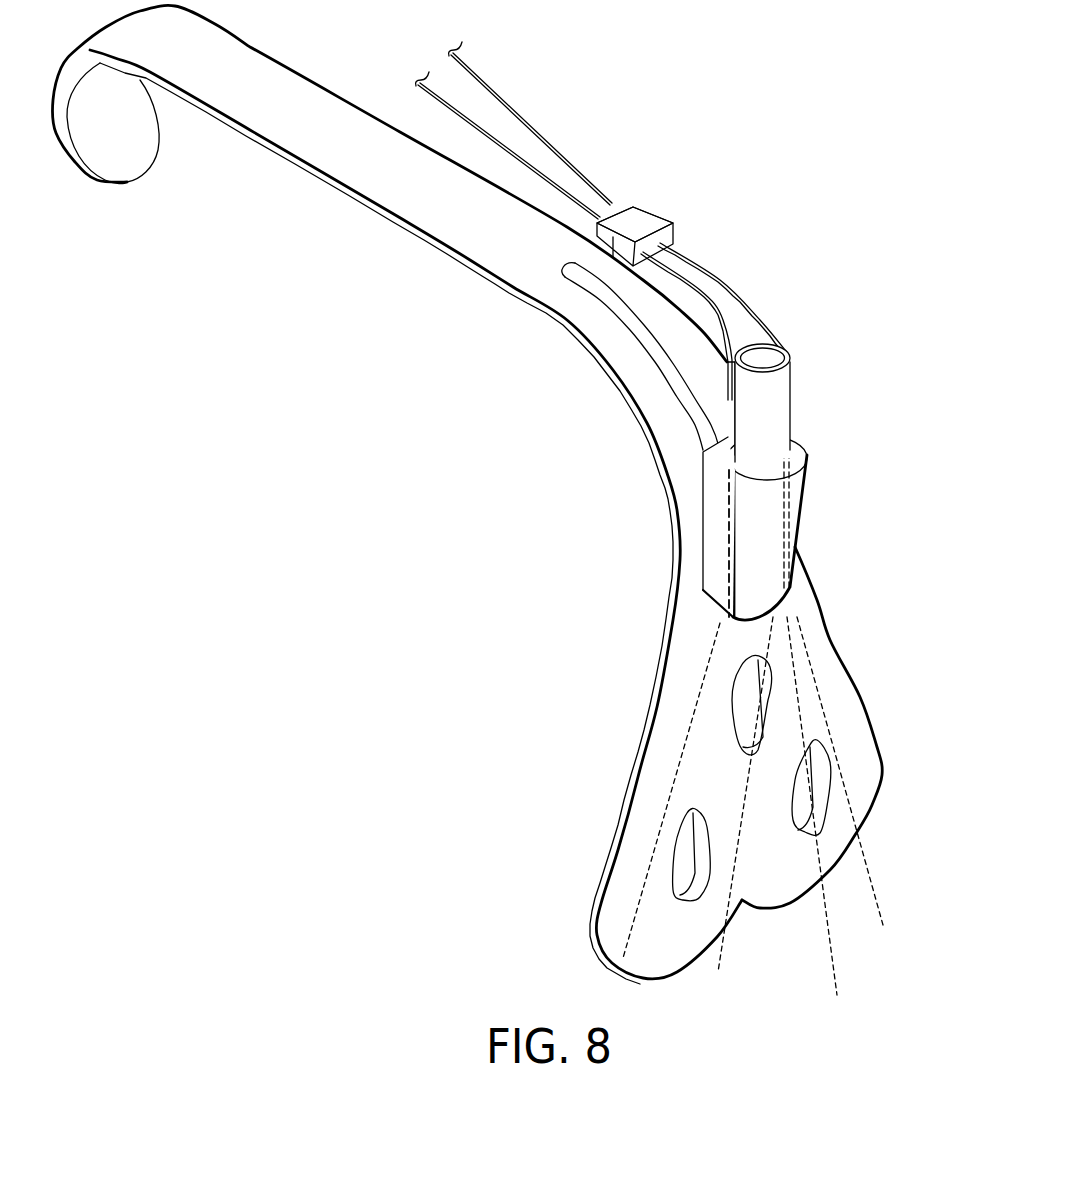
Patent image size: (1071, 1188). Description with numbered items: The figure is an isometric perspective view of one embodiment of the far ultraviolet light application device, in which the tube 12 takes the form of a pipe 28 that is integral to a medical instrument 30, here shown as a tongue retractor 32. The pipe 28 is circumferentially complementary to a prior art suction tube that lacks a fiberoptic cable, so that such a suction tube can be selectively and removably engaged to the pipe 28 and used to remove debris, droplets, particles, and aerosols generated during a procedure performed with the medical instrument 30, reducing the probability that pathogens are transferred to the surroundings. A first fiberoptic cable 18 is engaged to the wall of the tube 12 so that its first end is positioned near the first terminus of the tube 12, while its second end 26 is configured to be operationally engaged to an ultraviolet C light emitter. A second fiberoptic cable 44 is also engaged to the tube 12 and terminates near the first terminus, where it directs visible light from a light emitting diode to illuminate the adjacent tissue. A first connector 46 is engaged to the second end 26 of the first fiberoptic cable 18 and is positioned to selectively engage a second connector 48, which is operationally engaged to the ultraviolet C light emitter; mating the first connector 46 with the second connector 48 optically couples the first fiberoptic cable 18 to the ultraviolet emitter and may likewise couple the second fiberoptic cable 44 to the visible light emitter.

The medical instrument 30 is at (446, 249).
The second connector 48 is at (629, 203).
The first connector 46 is at (657, 216).
The second end 26 is at (673, 240).
The pipe 28 is at (769, 400).
The tube 12 is at (769, 430).
The first fiberoptic cable 18 is at (796, 496).
The second fiberoptic cable 44 is at (743, 543).
The tongue retractor 32 is at (828, 670).